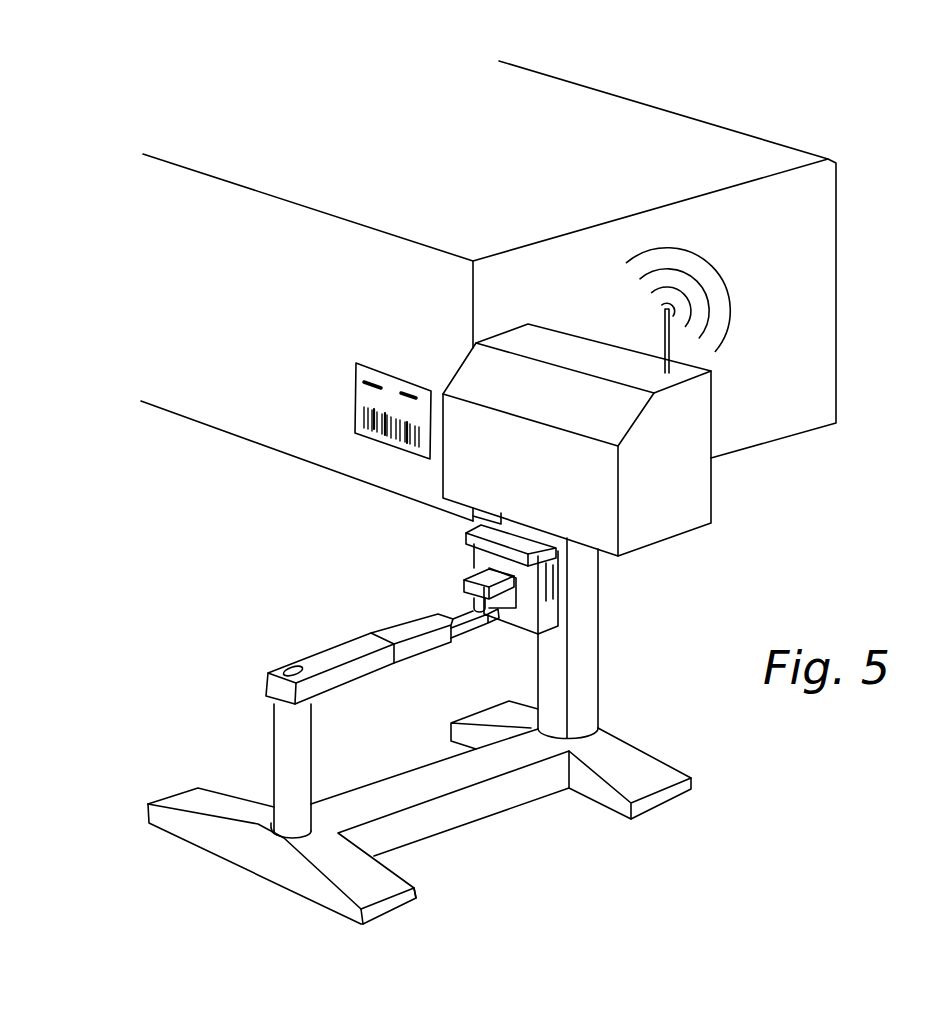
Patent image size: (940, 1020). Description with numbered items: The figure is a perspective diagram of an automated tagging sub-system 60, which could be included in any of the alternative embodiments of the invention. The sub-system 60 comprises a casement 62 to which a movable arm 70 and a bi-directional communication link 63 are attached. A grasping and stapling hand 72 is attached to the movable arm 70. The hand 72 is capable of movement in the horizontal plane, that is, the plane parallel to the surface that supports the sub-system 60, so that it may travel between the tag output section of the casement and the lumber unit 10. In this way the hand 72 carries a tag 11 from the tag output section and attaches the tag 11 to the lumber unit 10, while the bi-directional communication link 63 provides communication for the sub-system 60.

The lumber unit 10 is at (851, 210).
The tag 11 is at (360, 392).
The automated tagging sub-system 60 is at (288, 564).
The casement 62 is at (694, 487).
The bi-directional communication link 63 is at (662, 311).
The movable arm 70 is at (317, 660).
The grasping and stapling hand 72 is at (480, 560).